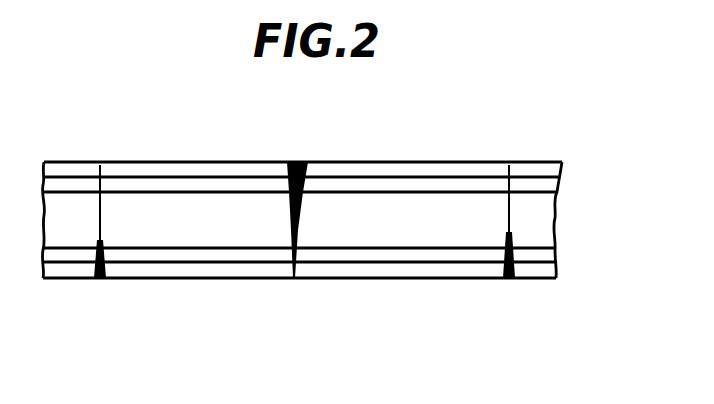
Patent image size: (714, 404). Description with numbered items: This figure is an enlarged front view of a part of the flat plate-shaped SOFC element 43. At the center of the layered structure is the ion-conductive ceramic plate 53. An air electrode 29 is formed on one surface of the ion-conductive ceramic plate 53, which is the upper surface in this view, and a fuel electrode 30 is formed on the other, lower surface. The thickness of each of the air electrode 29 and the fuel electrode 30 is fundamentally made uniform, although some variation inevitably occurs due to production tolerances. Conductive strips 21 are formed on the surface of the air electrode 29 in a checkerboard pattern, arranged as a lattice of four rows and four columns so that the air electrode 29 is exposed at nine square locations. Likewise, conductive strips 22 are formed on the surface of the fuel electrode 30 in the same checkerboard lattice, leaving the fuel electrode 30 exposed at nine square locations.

The conductive strips 21 is at (415, 168).
The conductive strips 22 is at (420, 272).
The air electrode 29 is at (460, 184).
The fuel electrode 30 is at (489, 258).
The flat plate-shaped SOFC element 43 is at (570, 162).
The ion-conductive ceramic plate 53 is at (545, 226).